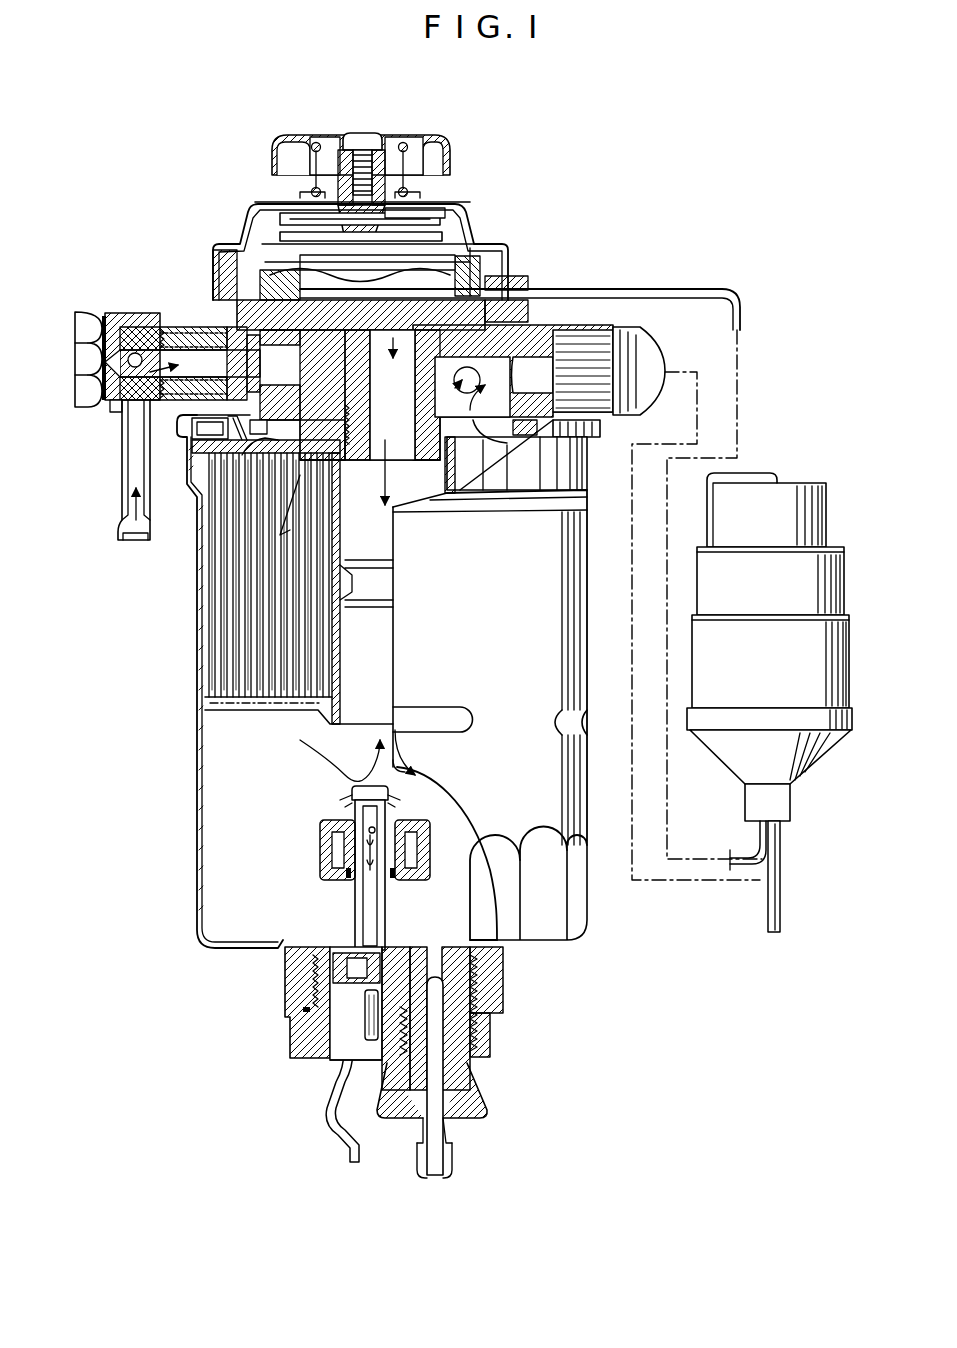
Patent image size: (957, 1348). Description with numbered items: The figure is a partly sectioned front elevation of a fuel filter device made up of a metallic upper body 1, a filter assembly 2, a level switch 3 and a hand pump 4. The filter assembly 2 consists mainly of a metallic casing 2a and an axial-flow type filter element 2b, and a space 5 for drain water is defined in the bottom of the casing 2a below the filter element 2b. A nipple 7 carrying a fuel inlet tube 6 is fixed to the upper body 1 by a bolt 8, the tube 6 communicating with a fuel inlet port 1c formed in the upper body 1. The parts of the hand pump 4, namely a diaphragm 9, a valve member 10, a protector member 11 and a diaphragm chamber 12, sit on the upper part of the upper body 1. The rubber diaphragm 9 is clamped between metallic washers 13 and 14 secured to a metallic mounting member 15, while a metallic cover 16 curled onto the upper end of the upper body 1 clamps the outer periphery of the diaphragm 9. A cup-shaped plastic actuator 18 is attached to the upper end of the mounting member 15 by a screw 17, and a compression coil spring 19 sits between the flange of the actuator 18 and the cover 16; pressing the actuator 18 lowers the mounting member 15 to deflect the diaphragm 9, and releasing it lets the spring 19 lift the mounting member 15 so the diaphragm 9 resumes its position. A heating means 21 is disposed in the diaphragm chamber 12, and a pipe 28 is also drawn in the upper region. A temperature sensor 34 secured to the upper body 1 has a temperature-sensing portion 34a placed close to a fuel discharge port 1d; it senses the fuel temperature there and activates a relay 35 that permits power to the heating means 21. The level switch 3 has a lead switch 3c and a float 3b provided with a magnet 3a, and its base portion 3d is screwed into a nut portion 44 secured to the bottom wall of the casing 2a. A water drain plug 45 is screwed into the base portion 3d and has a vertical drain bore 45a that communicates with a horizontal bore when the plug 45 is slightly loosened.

The upper body 1 is at (585, 340).
The fuel inlet port 1c is at (253, 355).
The fuel discharge port 1d is at (513, 368).
The filter assembly 2 is at (586, 612).
The metallic casing 2a is at (560, 688).
The filter element 2b is at (318, 653).
The level switch 3 is at (268, 912).
The magnet 3a is at (397, 893).
The float 3b is at (400, 887).
The lead switch 3c is at (380, 863).
The base portion 3d is at (303, 1067).
The hand pump 4 is at (432, 130).
The space for drain water 5 is at (220, 817).
The fuel inlet tube 6 is at (132, 500).
The nipple 7 is at (110, 400).
The bolt 8 is at (92, 318).
The diaphragm 9 is at (440, 246).
The valve member 10 is at (257, 360).
The protector member 11 is at (265, 292).
The diaphragm chamber 12 is at (395, 233).
The metallic washer 13 is at (300, 212).
The metallic washer 14 is at (290, 230).
The mounting member 15 is at (420, 212).
The cover 16 is at (262, 226).
The screw 17 is at (362, 148).
The actuator 18 is at (403, 145).
The compression coil spring 19 is at (314, 145).
The heating means 21 is at (472, 258).
The vent pipe 28 is at (545, 288).
The temperature sensor 34 is at (635, 338).
The temperature-sensing portion 34a is at (533, 417).
The relay 35 is at (798, 499).
The nut portion 44 is at (290, 997).
The water drain plug 45 is at (470, 1107).
The vertical drain bore 45a is at (433, 1080).